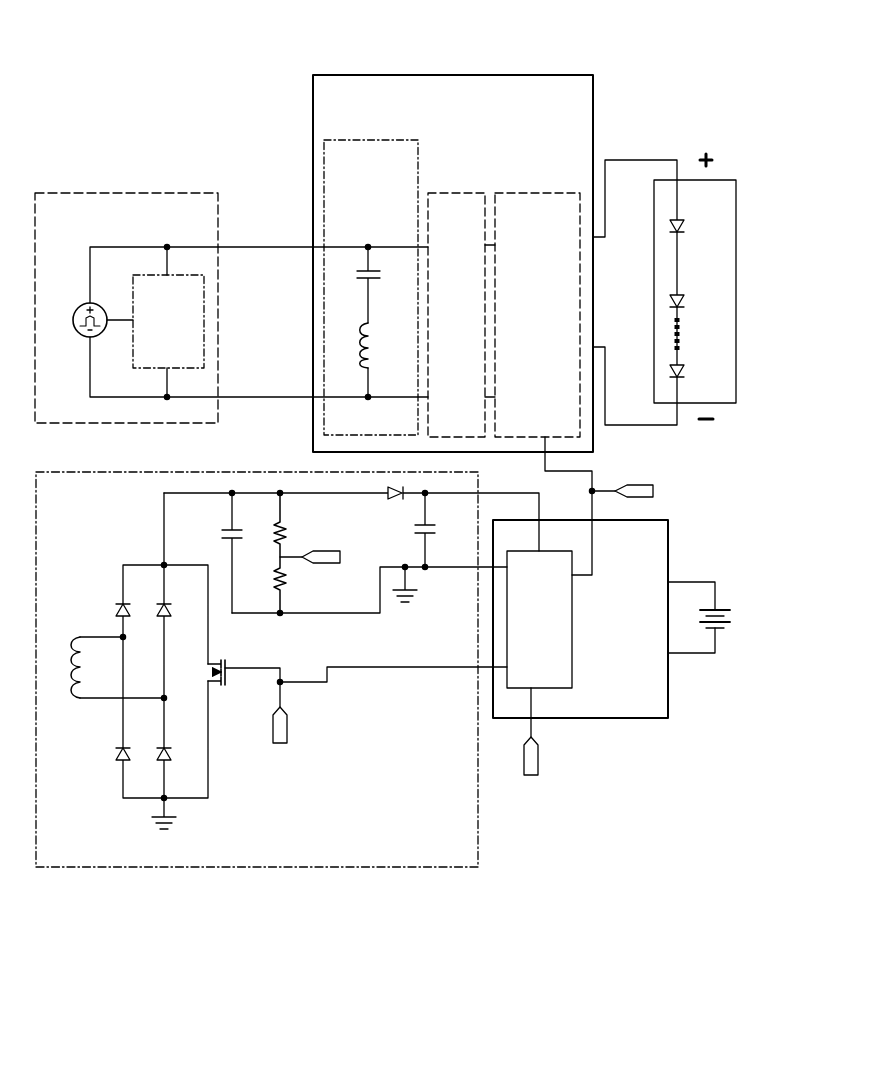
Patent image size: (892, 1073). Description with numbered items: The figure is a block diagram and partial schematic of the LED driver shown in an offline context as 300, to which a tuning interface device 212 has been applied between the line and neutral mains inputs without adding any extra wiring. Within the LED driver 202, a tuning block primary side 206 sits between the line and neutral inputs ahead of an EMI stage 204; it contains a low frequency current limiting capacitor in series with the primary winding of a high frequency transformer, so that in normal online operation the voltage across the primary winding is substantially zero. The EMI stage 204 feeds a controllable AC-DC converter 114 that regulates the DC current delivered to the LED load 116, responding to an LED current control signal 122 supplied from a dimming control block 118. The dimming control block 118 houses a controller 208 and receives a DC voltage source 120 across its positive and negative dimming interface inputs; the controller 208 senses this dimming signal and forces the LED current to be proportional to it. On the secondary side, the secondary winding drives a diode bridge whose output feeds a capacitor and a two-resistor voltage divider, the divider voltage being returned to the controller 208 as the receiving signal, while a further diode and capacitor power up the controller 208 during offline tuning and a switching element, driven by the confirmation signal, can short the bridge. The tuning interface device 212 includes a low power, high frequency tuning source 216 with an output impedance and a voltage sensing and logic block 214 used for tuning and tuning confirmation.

The LED driver in offline context 300 is at (213, 95).
The LED driver 202 is at (388, 75).
The tuning block primary side 206 is at (395, 140).
The EMI stage 204 is at (440, 193).
The AC-DC converter 114 is at (522, 193).
The LED load 116 is at (736, 318).
The tuning interface device 212 is at (140, 193).
The tuning source 216 is at (73, 320).
The voltage sensing and logic block 214 is at (155, 368).
The dimming control block 118 is at (635, 718).
The controller 208 is at (560, 688).
The LED current control signal 122 is at (655, 493).
The DC voltage source 120 is at (733, 612).